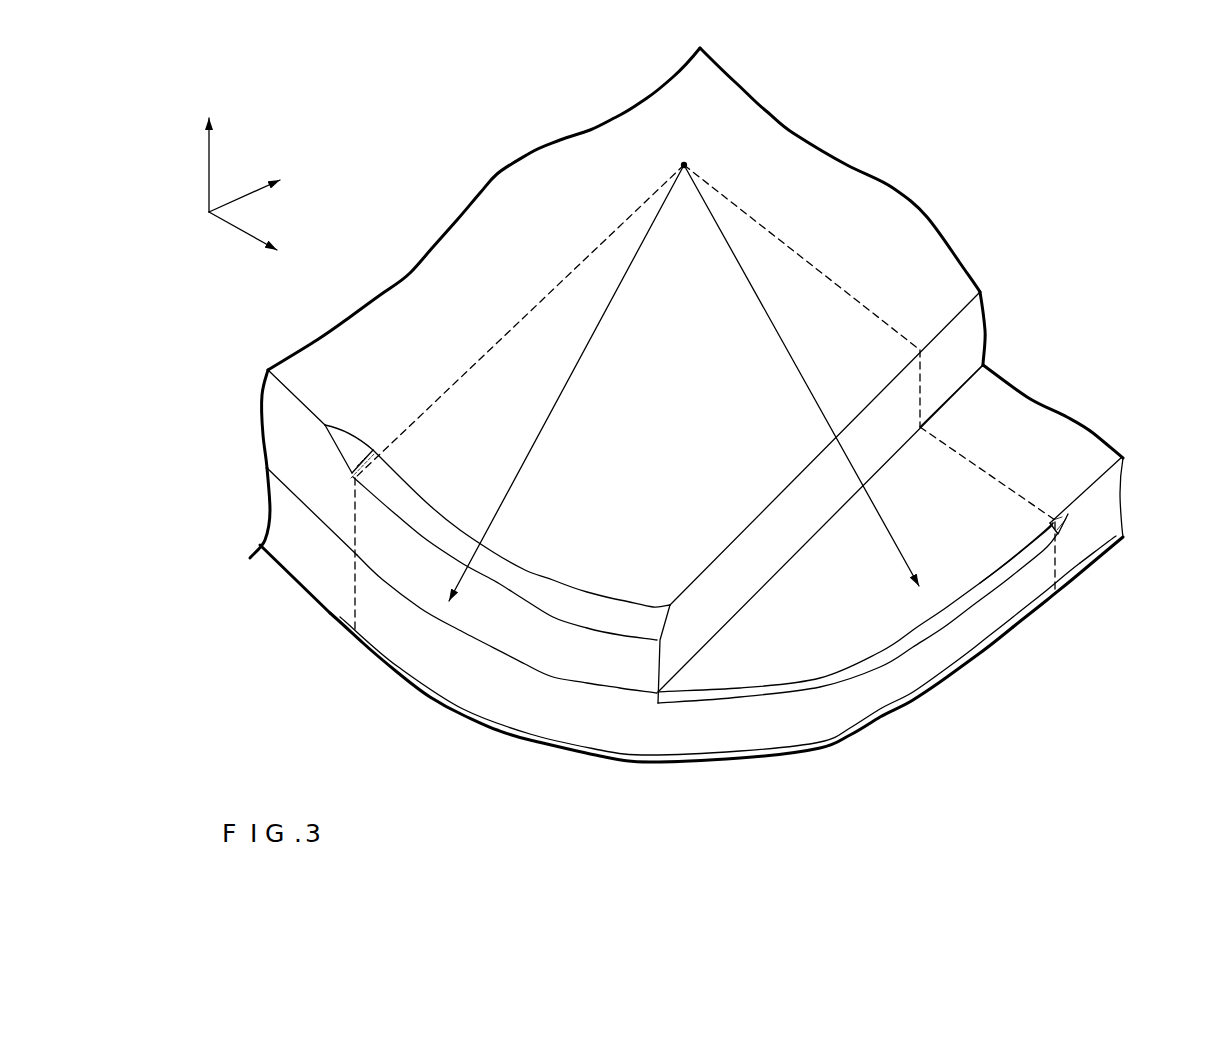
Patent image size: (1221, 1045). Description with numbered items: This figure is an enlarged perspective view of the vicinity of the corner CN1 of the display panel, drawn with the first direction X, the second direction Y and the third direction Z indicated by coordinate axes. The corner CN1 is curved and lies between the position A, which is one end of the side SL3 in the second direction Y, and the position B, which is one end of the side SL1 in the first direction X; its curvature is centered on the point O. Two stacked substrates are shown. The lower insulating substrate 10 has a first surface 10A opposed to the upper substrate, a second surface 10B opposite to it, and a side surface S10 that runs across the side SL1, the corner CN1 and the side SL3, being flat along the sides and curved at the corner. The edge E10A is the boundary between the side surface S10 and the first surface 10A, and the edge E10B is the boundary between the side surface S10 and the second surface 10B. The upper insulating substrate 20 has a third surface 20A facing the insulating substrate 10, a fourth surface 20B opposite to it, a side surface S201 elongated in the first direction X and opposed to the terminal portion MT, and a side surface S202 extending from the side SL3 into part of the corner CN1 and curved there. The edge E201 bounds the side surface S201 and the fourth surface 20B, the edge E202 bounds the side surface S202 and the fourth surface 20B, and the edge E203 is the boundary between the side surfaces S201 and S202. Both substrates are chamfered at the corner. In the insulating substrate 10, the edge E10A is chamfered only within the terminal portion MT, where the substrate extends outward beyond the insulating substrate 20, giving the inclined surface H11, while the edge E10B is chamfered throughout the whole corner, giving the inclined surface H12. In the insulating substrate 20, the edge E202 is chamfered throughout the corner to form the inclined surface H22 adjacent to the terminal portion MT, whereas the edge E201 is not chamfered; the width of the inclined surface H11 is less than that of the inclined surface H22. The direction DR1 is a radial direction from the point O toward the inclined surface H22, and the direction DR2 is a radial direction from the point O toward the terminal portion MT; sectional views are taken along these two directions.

The insulating substrate 10 is at (272, 516).
The insulating substrate 20 is at (270, 402).
The first surface 10A is at (1051, 434).
The second surface 10B is at (1072, 558).
The third surface 20A is at (940, 384).
The fourth surface 20B is at (883, 230).
The edge E201 is at (948, 311).
The edge E202 is at (297, 390).
The edge E203 is at (655, 670).
The edge E10A is at (1094, 471).
The edge E10B is at (1110, 557).
The side surface S10 is at (1101, 517).
The side surface S201 is at (960, 341).
The side surface S202 is at (295, 447).
The inclined surface H11 is at (812, 690).
The inclined surface H12 is at (904, 708).
The inclined surface H22 is at (545, 602).
The terminal portion MT is at (960, 563).
The corner CN1 is at (700, 794).
The side SL1 is at (1112, 683).
The side SL3 is at (277, 620).
The direction DR1 is at (566, 383).
The direction DR2 is at (801, 375).
The point O is at (637, 306).
The position A is at (362, 564).
The position B is at (1057, 580).
The first direction X is at (257, 187).
The second direction Y is at (254, 240).
The third direction Z is at (209, 148).